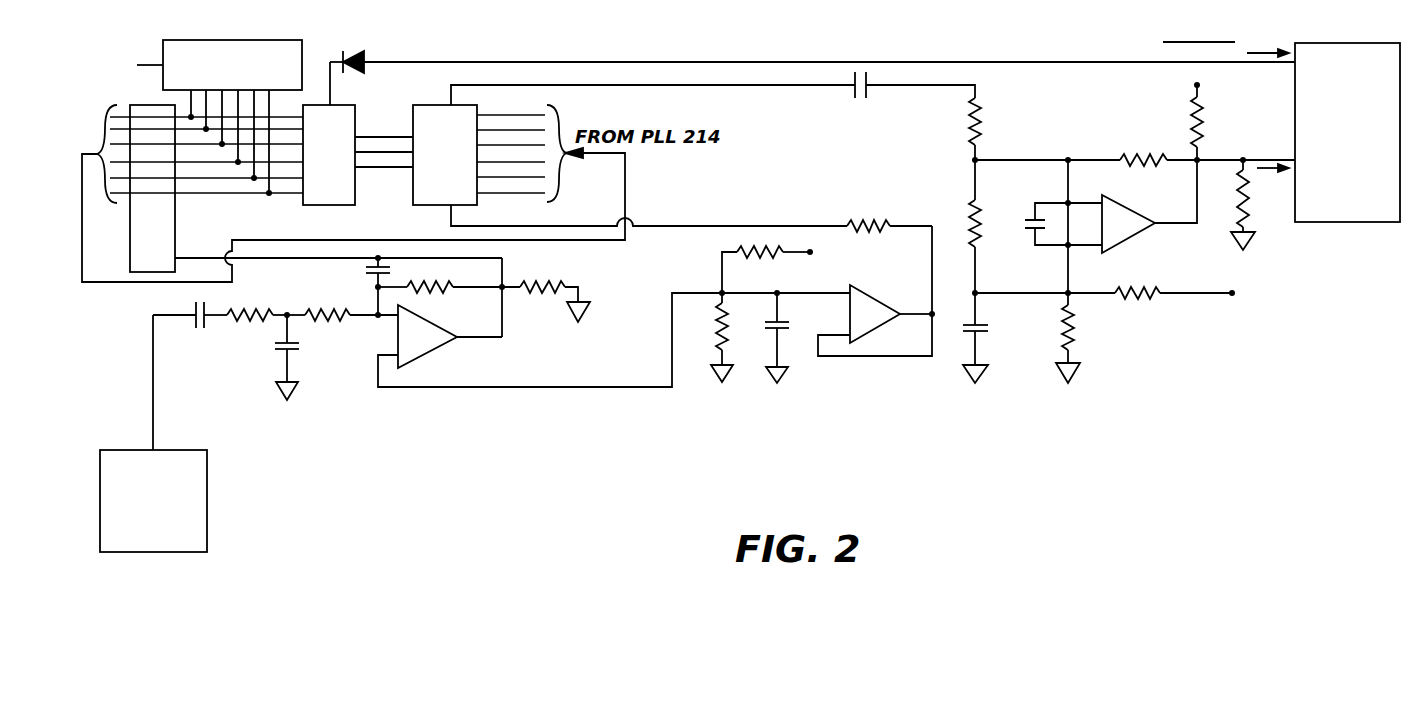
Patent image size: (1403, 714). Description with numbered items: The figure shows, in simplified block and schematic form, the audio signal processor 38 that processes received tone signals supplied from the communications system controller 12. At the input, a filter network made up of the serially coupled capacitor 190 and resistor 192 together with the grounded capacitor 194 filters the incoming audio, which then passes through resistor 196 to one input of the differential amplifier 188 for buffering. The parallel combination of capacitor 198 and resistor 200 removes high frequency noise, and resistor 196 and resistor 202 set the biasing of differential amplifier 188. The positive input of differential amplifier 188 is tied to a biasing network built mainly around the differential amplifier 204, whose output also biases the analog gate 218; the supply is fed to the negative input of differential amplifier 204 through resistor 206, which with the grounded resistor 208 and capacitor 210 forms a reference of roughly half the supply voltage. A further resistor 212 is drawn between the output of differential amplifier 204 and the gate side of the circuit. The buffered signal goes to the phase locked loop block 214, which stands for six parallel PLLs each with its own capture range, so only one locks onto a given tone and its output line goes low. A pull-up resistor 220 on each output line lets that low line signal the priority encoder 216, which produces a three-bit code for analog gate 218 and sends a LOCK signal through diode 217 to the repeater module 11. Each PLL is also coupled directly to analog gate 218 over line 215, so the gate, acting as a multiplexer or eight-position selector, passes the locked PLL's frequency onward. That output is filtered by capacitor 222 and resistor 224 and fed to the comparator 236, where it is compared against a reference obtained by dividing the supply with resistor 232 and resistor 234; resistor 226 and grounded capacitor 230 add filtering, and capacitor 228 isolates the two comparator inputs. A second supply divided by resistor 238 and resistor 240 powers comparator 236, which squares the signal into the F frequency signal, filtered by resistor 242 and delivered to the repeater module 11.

The repeater module 11 is at (1355, 114).
The communications system controller 12 is at (168, 506).
The audio signal processor 38 is at (1220, 333).
The differential amplifier 188 is at (430, 352).
The capacitor 190 is at (206, 328).
The resistor 192 is at (234, 310).
The capacitor 194 is at (278, 347).
The resistor 196 is at (321, 325).
The capacitor 198 is at (367, 270).
The resistor 200 is at (437, 292).
The resistor 202 is at (558, 282).
The differential amplifier 204 is at (866, 293).
The resistor 206 is at (760, 256).
The resistor 208 is at (718, 338).
The capacitor 210 is at (766, 325).
The resistor 212 is at (871, 226).
The phase locked loop block 214 is at (172, 153).
The line 215 is at (158, 288).
The priority encoder 216 is at (348, 143).
The diode 217 is at (365, 74).
The analog gate 218 is at (464, 143).
The pull-up resistor 220 is at (256, 65).
The capacitor 222 is at (868, 96).
The resistor 224 is at (984, 120).
The resistor 226 is at (986, 226).
The capacitor 228 is at (1026, 227).
The capacitor 230 is at (989, 330).
The resistor 232 is at (1075, 330).
The resistor 234 is at (1141, 286).
The comparator 236 is at (1141, 193).
The resistor 238 is at (1146, 153).
The resistor 240 is at (1206, 130).
The resistor 242 is at (1250, 200).